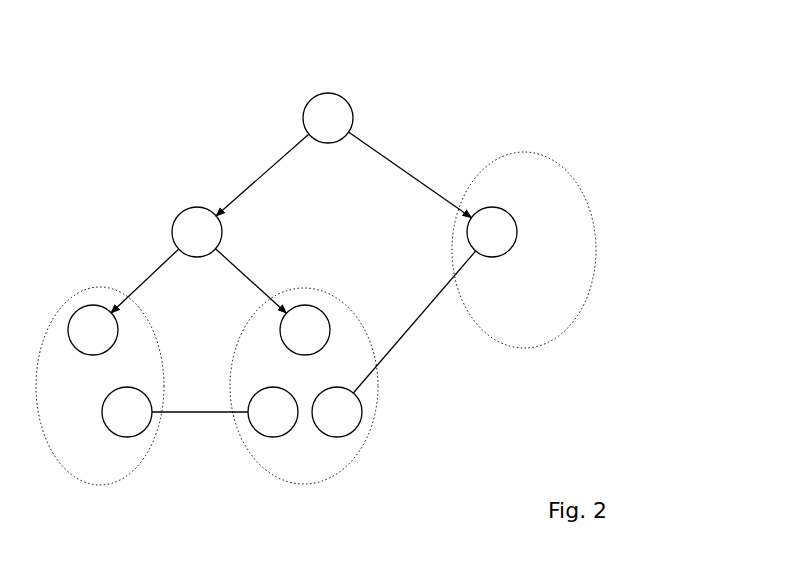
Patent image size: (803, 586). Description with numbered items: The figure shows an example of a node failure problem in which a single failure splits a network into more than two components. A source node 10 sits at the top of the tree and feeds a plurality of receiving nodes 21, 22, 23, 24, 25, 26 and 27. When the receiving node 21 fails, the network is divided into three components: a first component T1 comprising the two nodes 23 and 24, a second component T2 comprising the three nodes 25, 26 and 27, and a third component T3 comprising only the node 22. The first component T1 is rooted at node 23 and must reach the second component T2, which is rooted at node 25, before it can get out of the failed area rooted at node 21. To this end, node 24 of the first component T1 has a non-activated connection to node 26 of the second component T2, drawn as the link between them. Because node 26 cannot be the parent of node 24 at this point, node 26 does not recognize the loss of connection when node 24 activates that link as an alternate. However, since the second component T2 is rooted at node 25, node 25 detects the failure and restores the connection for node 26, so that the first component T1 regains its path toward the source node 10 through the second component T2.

The source node 10 is at (347, 101).
The receiving node 21 is at (191, 207).
The receiving node 22 is at (507, 211).
The receiving node 23 is at (90, 305).
The receiving node 24 is at (128, 387).
The receiving node 25 is at (317, 307).
The receiving node 26 is at (272, 437).
The receiving node 27 is at (340, 437).
The first component T1 is at (153, 323).
The second component T2 is at (372, 433).
The third component T3 is at (517, 153).